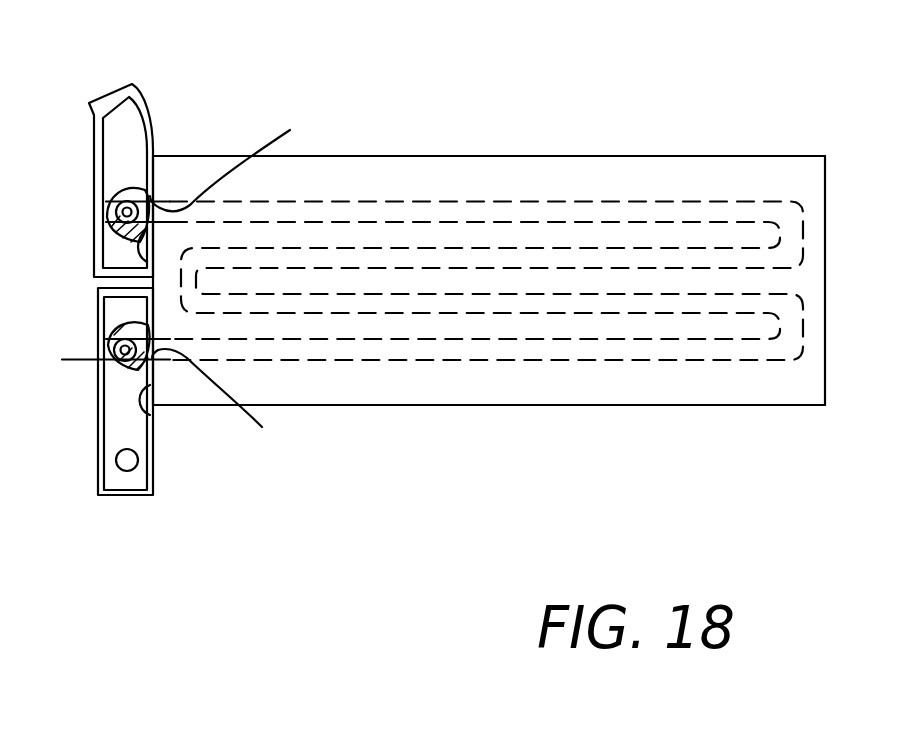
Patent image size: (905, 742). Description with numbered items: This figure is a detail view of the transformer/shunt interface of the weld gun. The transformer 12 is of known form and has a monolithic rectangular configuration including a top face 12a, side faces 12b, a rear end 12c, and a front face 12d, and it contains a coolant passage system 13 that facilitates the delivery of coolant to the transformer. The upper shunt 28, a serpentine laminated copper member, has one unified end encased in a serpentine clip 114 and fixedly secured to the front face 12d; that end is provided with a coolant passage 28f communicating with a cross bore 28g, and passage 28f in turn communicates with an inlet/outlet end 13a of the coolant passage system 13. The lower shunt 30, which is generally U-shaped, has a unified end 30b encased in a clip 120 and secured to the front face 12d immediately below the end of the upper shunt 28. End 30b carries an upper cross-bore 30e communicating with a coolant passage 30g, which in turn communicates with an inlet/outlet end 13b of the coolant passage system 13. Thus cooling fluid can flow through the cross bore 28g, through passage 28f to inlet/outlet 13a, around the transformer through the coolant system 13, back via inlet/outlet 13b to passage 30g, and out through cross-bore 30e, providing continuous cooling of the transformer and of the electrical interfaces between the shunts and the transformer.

The transformer 12 is at (483, 274).
The top face 12a is at (503, 156).
The side faces 12b is at (697, 392).
The rear end 12c is at (703, 165).
The front face 12d is at (150, 415).
The coolant passage system 13 is at (432, 286).
The inlet/outlet end 13a is at (368, 220).
The inlet/outlet end 13b is at (485, 362).
The upper shunt 28 is at (206, 156).
The coolant passage 28f is at (290, 130).
The cross bore 28g is at (133, 205).
The serpentine clip 114 is at (97, 237).
The lower shunt 30 is at (210, 458).
The unified end 30b is at (123, 420).
The upper cross-bore 30e is at (94, 343).
The coolant passage 30g is at (262, 427).
The clip 120 is at (153, 485).